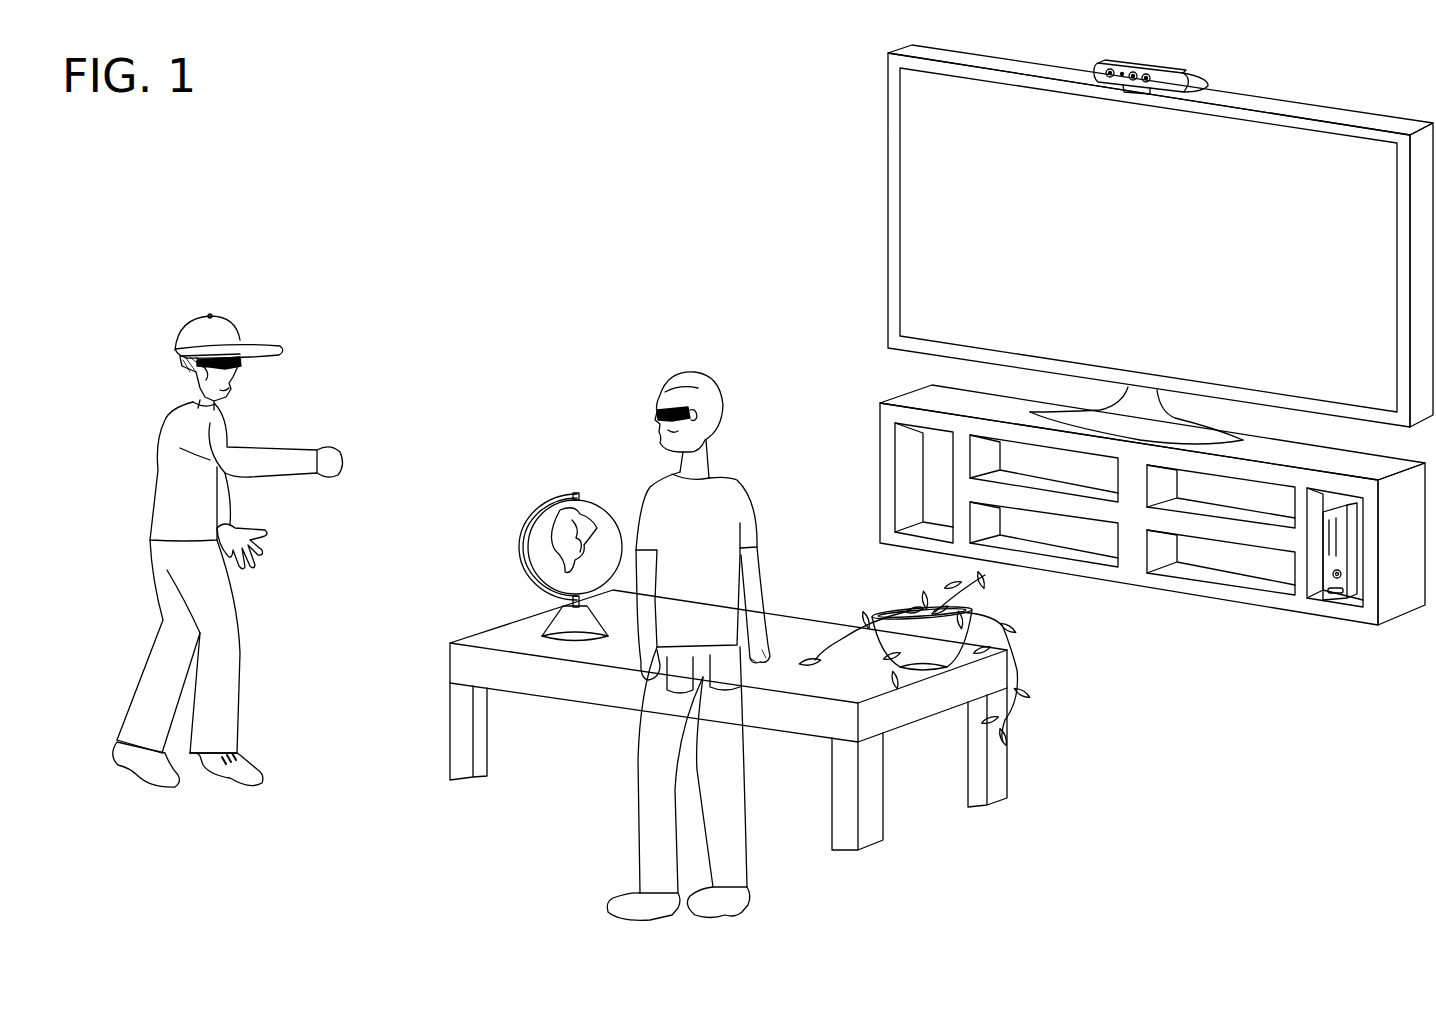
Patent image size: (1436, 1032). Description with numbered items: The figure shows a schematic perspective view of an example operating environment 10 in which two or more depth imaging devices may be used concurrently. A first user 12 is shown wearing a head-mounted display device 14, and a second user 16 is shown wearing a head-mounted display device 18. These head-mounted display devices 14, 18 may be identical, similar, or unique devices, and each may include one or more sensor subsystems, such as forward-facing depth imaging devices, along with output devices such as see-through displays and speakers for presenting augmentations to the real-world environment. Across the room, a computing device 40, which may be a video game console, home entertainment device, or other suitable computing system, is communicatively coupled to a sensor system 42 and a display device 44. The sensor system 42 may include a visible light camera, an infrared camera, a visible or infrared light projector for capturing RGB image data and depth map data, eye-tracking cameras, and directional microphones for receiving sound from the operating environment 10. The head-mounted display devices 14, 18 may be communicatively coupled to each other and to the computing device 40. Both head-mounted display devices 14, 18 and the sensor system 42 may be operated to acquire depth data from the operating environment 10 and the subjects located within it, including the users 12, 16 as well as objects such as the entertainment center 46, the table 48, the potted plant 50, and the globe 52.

The operating environment 10 is at (531, 54).
The first user 12 is at (197, 503).
The head-mounted display device 14 is at (257, 365).
The second user 16 is at (711, 528).
The head-mounted display device 18 is at (648, 409).
The computing device 40 is at (1325, 627).
The sensor system 42 is at (1155, 67).
The display device 44 is at (1380, 390).
The entertainment center 46 is at (1416, 528).
The table 48 is at (853, 693).
The potted plant 50 is at (894, 594).
The globe 52 is at (539, 488).